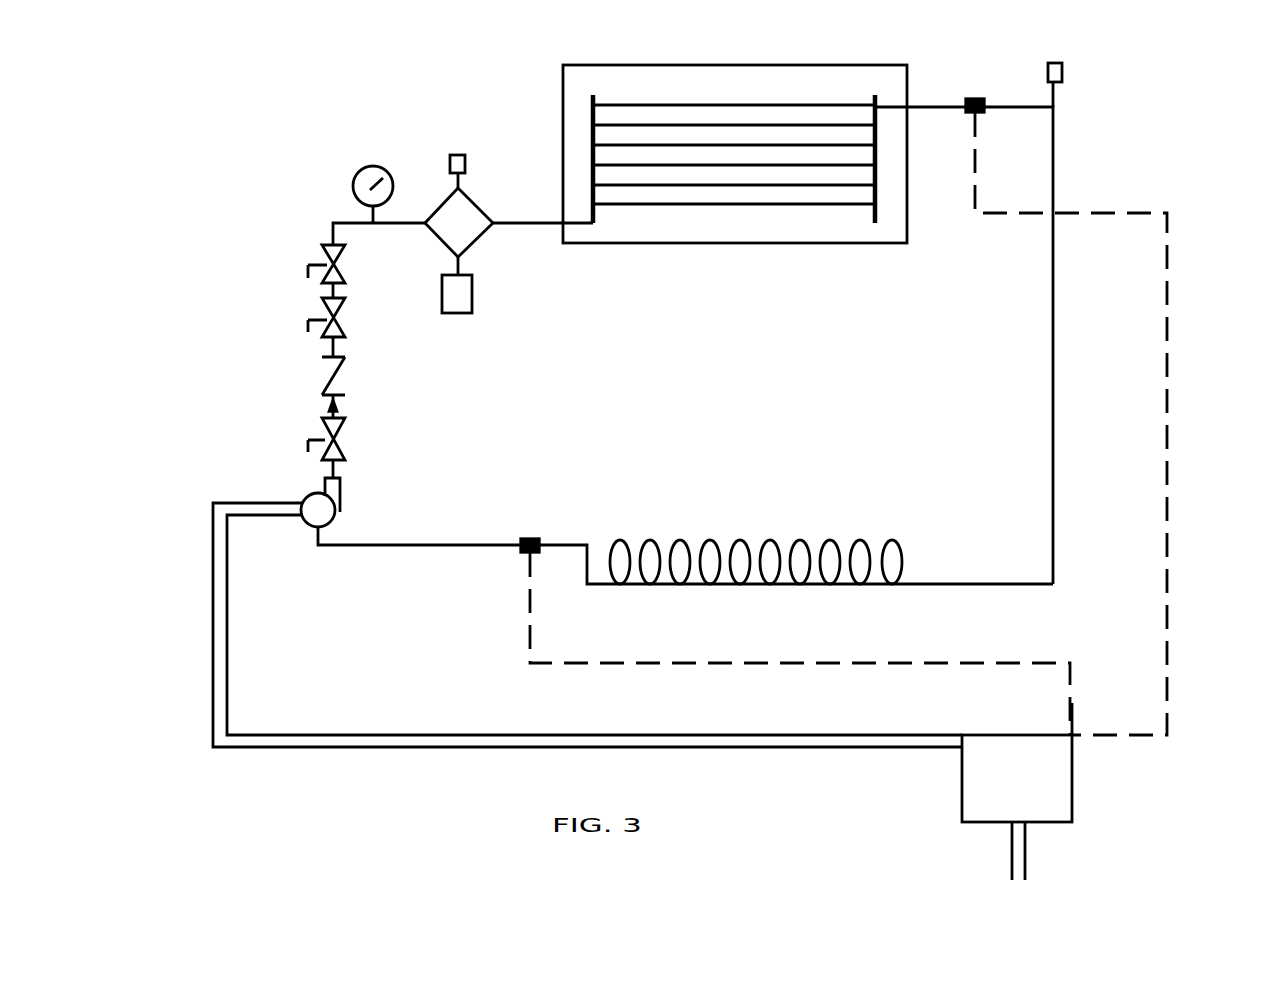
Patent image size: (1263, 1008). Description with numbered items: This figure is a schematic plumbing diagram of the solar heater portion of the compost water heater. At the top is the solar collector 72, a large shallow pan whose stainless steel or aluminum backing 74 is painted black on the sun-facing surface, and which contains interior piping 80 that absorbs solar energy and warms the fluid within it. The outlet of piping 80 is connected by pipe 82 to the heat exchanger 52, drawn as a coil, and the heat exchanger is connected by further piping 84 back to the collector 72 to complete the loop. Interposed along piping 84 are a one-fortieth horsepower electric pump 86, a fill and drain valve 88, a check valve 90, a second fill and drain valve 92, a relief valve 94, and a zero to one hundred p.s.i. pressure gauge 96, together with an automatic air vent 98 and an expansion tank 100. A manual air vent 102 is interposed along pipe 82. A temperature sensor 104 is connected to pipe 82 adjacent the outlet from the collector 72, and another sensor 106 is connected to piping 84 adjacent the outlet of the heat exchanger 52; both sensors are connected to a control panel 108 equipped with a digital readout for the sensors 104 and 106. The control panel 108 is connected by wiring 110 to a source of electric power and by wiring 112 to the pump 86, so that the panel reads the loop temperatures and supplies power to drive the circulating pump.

The heat exchanger 52 is at (742, 545).
The solar collector 72 is at (723, 243).
The backing 74 is at (813, 225).
The interior piping 80 is at (807, 100).
The pipe 82 is at (1053, 365).
The piping 84 is at (407, 545).
The electric pump 86 is at (314, 511).
The fill and drain valve 88 is at (343, 430).
The check valve 90 is at (330, 380).
The fill and drain valve 92 is at (343, 311).
The relief valve 94 is at (343, 258).
The pressure gauge 96 is at (371, 172).
The automatic air vent 98 is at (465, 163).
The expansion tank 100 is at (442, 291).
The manual air vent 102 is at (1062, 70).
The temperature sensor 104 is at (965, 113).
The sensor 106 is at (520, 553).
The control panel 108 is at (1060, 760).
The wiring 110 is at (1167, 446).
The wiring 112 is at (632, 747).